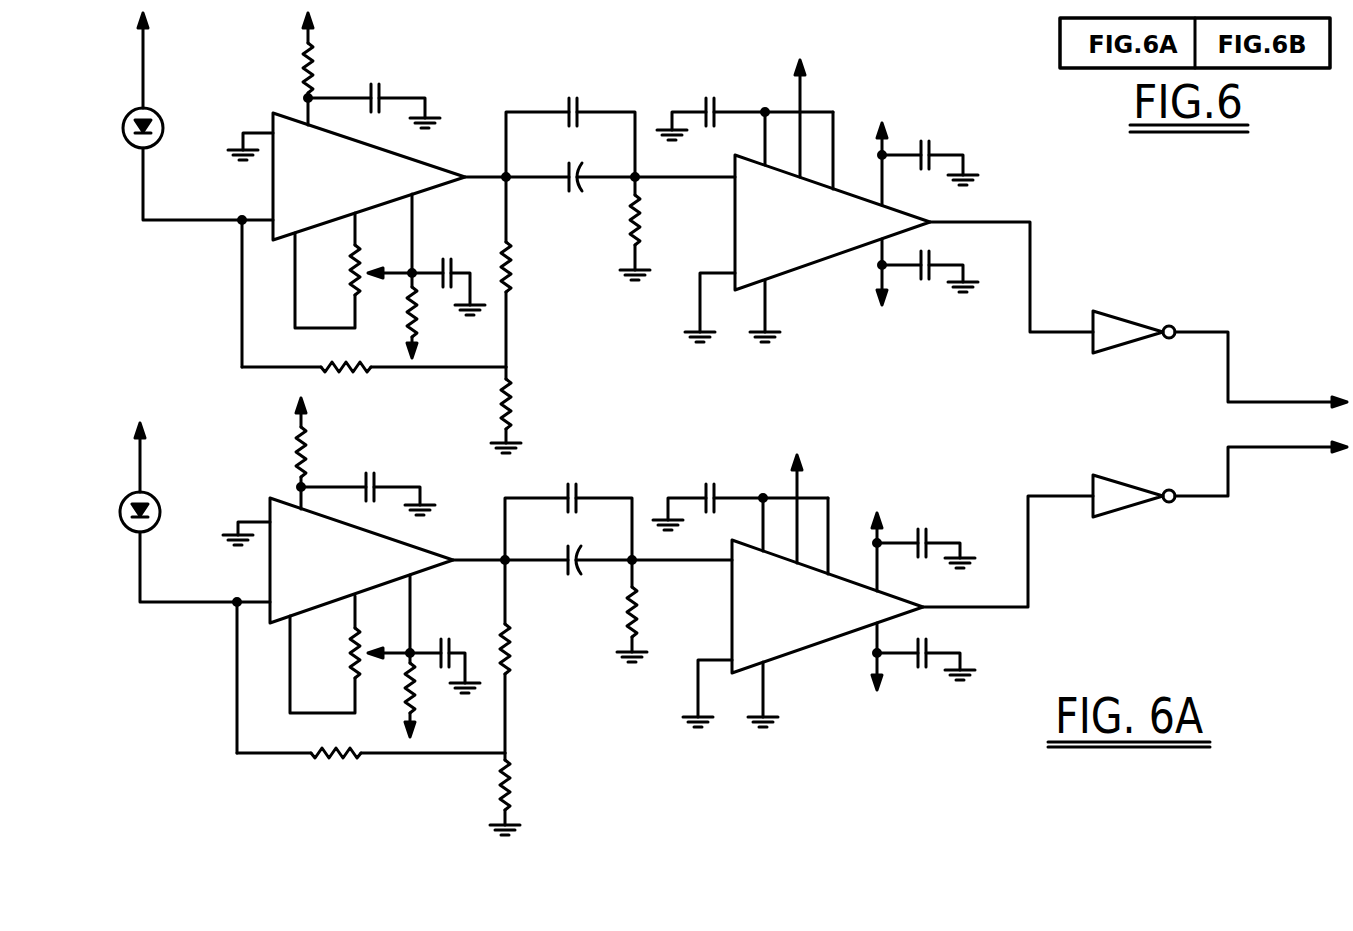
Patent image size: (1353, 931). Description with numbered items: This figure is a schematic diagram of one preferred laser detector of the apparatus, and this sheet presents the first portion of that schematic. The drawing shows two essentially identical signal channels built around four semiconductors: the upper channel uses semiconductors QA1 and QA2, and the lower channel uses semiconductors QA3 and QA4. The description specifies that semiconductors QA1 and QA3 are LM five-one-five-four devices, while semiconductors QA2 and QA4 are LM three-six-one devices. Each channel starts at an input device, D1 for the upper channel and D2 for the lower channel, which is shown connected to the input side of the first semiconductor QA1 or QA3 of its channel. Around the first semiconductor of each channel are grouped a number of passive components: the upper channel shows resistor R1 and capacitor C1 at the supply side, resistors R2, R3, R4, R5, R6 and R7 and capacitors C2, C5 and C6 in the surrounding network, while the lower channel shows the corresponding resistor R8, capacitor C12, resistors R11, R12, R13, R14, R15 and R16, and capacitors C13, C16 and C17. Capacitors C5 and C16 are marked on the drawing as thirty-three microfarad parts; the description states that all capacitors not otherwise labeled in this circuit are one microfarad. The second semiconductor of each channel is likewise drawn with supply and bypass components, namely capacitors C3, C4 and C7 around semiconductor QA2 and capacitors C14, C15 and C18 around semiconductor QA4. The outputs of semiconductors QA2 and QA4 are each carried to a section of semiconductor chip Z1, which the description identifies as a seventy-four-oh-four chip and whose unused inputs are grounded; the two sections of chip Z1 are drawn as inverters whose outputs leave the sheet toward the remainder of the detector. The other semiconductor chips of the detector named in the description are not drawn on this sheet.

The photodiode D1 is at (161, 128).
The photodiode D2 is at (158, 512).
The semiconductor QA1 is at (321, 176).
The semiconductor QA2 is at (832, 222).
The semiconductor QA3 is at (309, 560).
The semiconductor QA4 is at (827, 606).
The resistor R1 is at (294, 69).
The potentiometer R2 is at (369, 270).
The resistor R3 is at (389, 276).
The resistor R4 is at (525, 272).
The resistor R5 is at (649, 228).
The resistor R6 is at (374, 384).
The resistor R7 is at (520, 410).
The resistor R8 is at (282, 453).
The resistor R11 is at (386, 656).
The potentiometer R12 is at (365, 654).
The resistor R13 is at (531, 656).
The resistor R14 is at (656, 611).
The resistor R15 is at (371, 771).
The resistor R16 is at (526, 794).
The capacitor C1 is at (374, 92).
The capacitor C2 is at (570, 123).
The capacitor C3 is at (745, 105).
The capacitor C4 is at (927, 158).
The electrolytic capacitor C5 (33 uF) C5 is at (583, 209).
The capacitor C6 is at (457, 276).
The capacitor C7 is at (927, 276).
The capacitor C12 is at (368, 477).
The capacitor C13 is at (568, 507).
The capacitor C14 is at (740, 492).
The capacitor C15 is at (923, 540).
The electrolytic capacitor C16 (33 uF) C16 is at (570, 591).
The capacitor C17 is at (452, 646).
The capacitor C18 is at (926, 650).
The semiconductor chip Z1 is at (1134, 415).